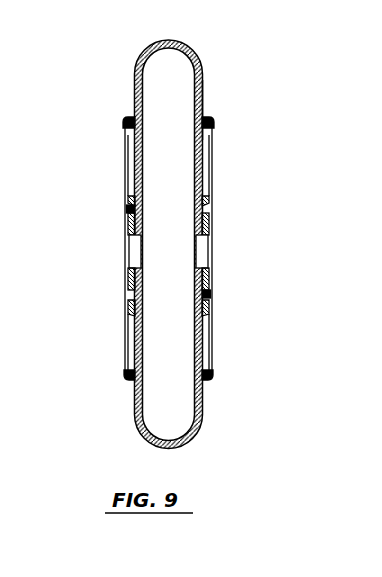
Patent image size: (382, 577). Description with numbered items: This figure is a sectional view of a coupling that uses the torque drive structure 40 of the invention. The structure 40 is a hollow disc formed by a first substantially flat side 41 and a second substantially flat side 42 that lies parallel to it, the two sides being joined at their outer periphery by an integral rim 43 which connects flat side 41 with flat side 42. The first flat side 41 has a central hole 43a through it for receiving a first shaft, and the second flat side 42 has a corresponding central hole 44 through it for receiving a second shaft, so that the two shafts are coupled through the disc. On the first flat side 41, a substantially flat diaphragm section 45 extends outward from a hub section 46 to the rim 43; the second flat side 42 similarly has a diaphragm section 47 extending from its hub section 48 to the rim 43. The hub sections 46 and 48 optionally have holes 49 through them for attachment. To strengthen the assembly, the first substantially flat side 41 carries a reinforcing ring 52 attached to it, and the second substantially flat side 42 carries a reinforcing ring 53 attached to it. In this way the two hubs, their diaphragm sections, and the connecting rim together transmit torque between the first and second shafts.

The structure 40 is at (97, 331).
The first substantially flat side 41 is at (125, 148).
The second substantially flat side 42 is at (210, 148).
The integral rim 43 is at (168, 40).
The central hole 43a is at (131, 258).
The central hole 44 is at (207, 256).
The diaphragm section 45 is at (127, 124).
The hub section 46 is at (130, 198).
The diaphragm section 47 is at (203, 108).
The hub section 48 is at (208, 196).
The holes 49 is at (128, 208).
The reinforcing ring 52 is at (128, 378).
The reinforcing ring 53 is at (210, 378).